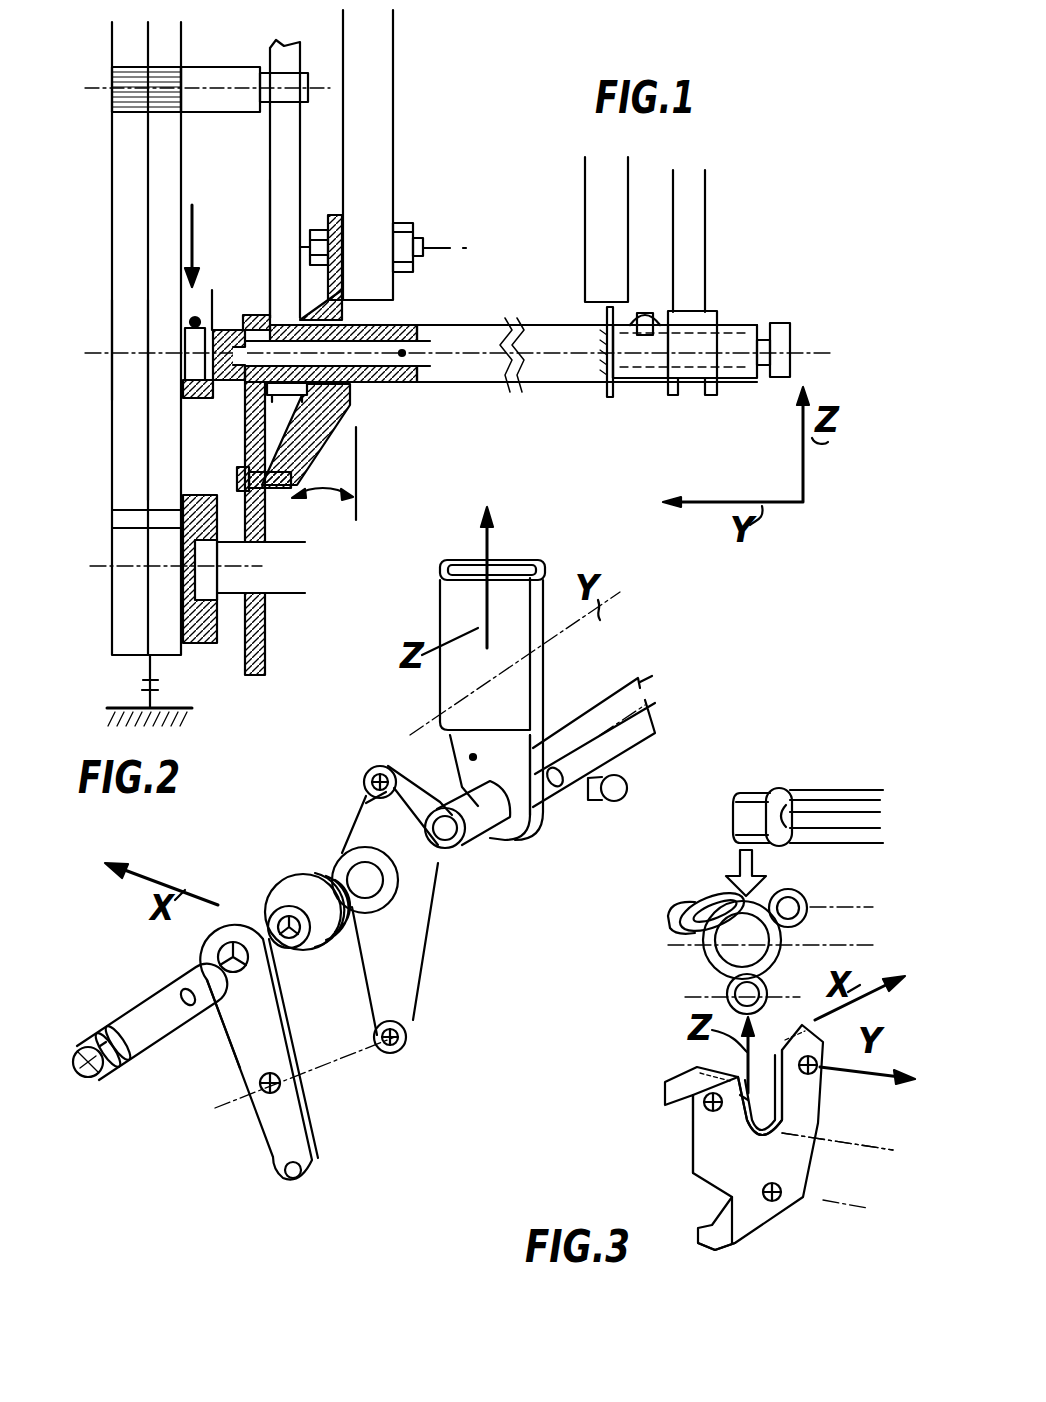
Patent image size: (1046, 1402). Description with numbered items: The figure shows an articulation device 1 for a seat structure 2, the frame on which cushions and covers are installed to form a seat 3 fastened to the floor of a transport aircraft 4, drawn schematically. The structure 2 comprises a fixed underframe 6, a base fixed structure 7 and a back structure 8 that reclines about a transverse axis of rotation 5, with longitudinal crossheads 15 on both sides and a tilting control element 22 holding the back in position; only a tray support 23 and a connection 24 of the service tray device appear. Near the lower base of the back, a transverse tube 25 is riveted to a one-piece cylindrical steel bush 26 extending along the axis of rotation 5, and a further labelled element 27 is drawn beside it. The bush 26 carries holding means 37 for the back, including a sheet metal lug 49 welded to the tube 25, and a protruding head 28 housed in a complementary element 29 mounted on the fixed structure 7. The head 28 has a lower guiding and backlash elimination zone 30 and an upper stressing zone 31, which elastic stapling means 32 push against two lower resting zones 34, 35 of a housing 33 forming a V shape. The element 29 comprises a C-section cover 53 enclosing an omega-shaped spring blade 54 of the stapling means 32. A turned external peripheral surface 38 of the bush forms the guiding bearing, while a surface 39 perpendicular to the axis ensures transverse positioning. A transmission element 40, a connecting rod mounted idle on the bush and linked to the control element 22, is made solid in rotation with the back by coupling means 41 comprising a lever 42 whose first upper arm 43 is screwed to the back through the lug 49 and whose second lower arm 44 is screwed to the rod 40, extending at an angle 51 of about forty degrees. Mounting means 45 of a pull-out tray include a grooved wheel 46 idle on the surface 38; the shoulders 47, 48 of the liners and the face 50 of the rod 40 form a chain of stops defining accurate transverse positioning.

In FIG. 1, the articulation device 1 is at (105, 185).
In FIG. 2, the articulation device 1 is at (200, 1075).
In FIG. 3, the articulation device 1 is at (653, 1170).
In FIG. 1, the seat structure 2 is at (110, 56).
In FIG. 1, the seat 3 is at (93, 82).
In FIG. 1, the transport aircraft 4 is at (125, 708).
In FIG. 1, the axis of rotation 5 is at (102, 340).
In FIG. 2, the axis of rotation 5 is at (652, 735).
In FIG. 3, the axis of rotation 5 is at (893, 1150).
In FIG. 1, the fixed underframe 6 is at (148, 672).
In FIG. 1, the base fixed structure 7 is at (133, 407).
In FIG. 1, the back structure 8 is at (380, 113).
In FIG. 2, the back structure 8 is at (470, 598).
In FIG. 1, the longitudinal crosshead 15 is at (95, 400).
In FIG. 1, the tilting control element 22 is at (270, 620).
In FIG. 1, the tray support 23 is at (290, 186).
In FIG. 1, the connection 24 is at (218, 78).
In FIG. 1, the transverse tube 25 is at (480, 368).
In FIG. 2, the transverse tube 25 is at (628, 745).
In FIG. 1, the transversal bush 26 is at (435, 372).
In FIG. 2, the transversal bush 26 is at (170, 985).
In FIG. 3, the transversal bush 26 is at (815, 800).
In FIG. 1, the drive unit 27 is at (418, 287).
In FIG. 2, the drive unit 27 is at (545, 828).
In FIG. 1, the protruding head 28 is at (185, 360).
In FIG. 2, the protruding head 28 is at (100, 1045).
In FIG. 3, the protruding head 28 is at (752, 805).
In FIG. 1, the complementary element 29 is at (185, 398).
In FIG. 3, the complementary element 29 is at (678, 1115).
In FIG. 1, the guiding and backlash elimination lower zone 30 is at (775, 322).
In FIG. 2, the guiding and backlash elimination lower zone 30 is at (100, 1074).
In FIG. 2, the upper stressing backlash elimination zone 31 is at (121, 1012).
In FIG. 1, the elastic stapling means 32 is at (190, 315).
In FIG. 3, the elastic stapling means 32 is at (700, 966).
In FIG. 3, the housing 33 is at (735, 1060).
In FIG. 3, the lower resting zone 34 is at (745, 1112).
In FIG. 3, the lower resting zone 35 is at (770, 1092).
In FIG. 1, the holding means 37 is at (640, 312).
In FIG. 2, the holding means 37 is at (592, 803).
In FIG. 1, the external transverse peripheral surface 38 is at (222, 318).
In FIG. 3, the surface 39 is at (785, 792).
In FIG. 1, the transmission element 40 is at (253, 407).
In FIG. 2, the transmission element 40 is at (280, 1130).
In FIG. 1, the coupling means 41 is at (265, 175).
In FIG. 2, the coupling means 41 is at (358, 773).
In FIG. 2, the lever 42 is at (377, 926).
In FIG. 1, the first upper arm 43 is at (332, 215).
In FIG. 2, the first upper arm 43 is at (372, 790).
In FIG. 1, the second lower arm 44 is at (287, 500).
In FIG. 2, the second lower arm 44 is at (455, 1010).
In FIG. 1, the mounting means 45 is at (694, 398).
In FIG. 2, the mounting means 45 is at (291, 865).
In FIG. 1, the wheel 46 is at (293, 322).
In FIG. 2, the wheel 46 is at (290, 955).
In FIG. 2, the shoulder 47 is at (275, 900).
In FIG. 2, the external shoulder 48 is at (450, 850).
In FIG. 1, the lug 49 is at (607, 385).
In FIG. 2, the lug 49 is at (490, 786).
In FIG. 2, the face 50 is at (310, 1112).
In FIG. 1, the angle 51 is at (297, 473).
In FIG. 3, the cover 53 is at (725, 1195).
In FIG. 3, the elastically deformable part 54 is at (682, 915).